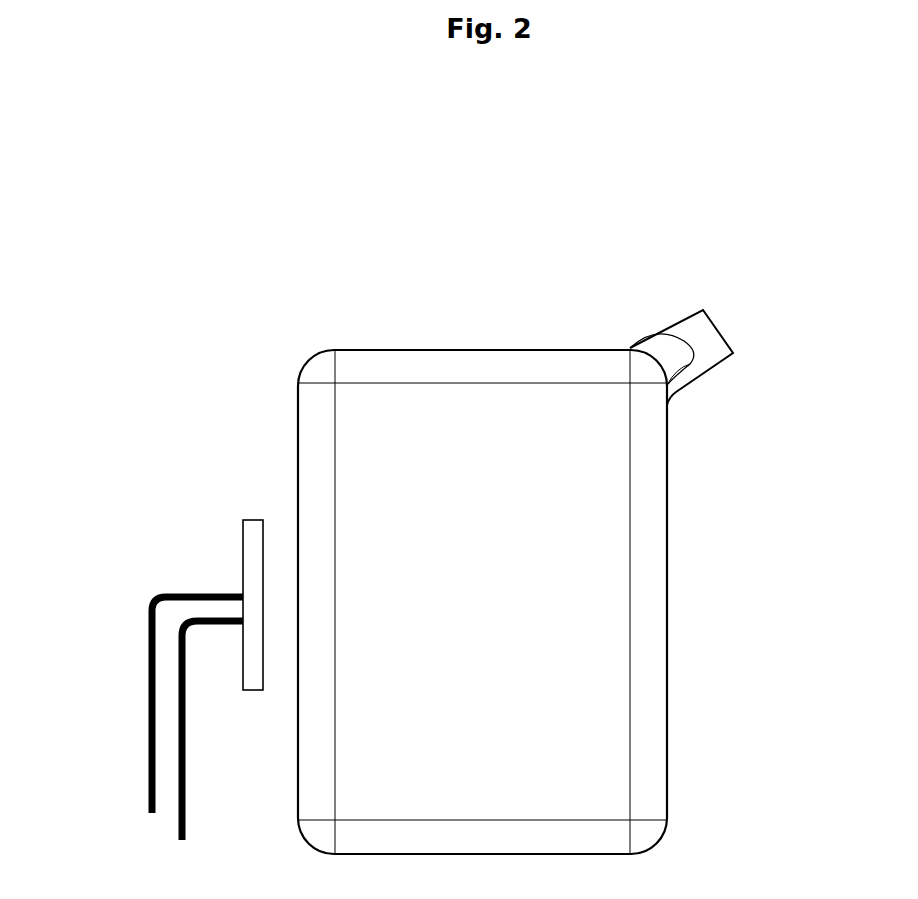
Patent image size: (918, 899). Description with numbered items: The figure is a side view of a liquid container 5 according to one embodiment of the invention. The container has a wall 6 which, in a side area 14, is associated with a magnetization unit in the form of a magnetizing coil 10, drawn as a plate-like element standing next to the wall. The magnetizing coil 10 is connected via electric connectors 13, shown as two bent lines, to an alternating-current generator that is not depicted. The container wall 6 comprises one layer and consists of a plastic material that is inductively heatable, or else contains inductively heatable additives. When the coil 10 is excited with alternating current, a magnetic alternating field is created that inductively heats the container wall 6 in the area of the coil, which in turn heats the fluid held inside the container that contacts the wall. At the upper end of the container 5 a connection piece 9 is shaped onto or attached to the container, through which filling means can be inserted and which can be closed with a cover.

The liquid container 5 is at (204, 328).
The container wall 6 is at (668, 528).
The connection piece 9 is at (698, 337).
The magnetizing coil 10 is at (252, 575).
The electric connectors 13 is at (178, 730).
The side area 14 is at (258, 480).